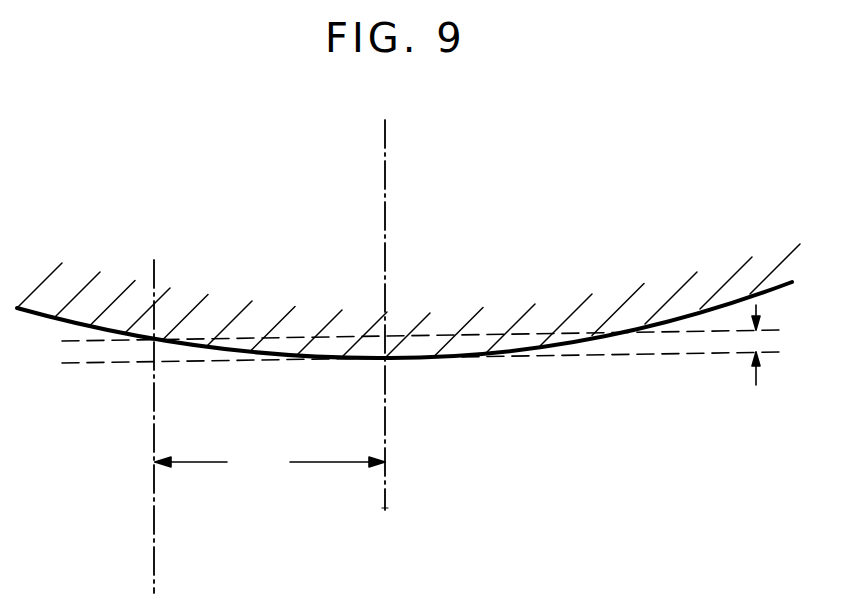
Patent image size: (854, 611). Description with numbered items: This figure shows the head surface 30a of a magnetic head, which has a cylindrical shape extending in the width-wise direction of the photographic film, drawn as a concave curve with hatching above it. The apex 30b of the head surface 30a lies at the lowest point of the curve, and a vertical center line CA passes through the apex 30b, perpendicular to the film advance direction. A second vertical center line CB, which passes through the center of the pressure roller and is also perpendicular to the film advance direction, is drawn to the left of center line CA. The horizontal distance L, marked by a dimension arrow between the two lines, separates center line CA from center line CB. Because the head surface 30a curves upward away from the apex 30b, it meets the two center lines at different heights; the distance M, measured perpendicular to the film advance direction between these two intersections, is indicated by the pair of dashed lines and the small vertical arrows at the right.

The head surface 30a is at (40, 316).
The apex 30b is at (386, 360).
The center line CA is at (385, 178).
The center line CB is at (155, 565).
The distance L is at (270, 464).
The distance M is at (755, 363).